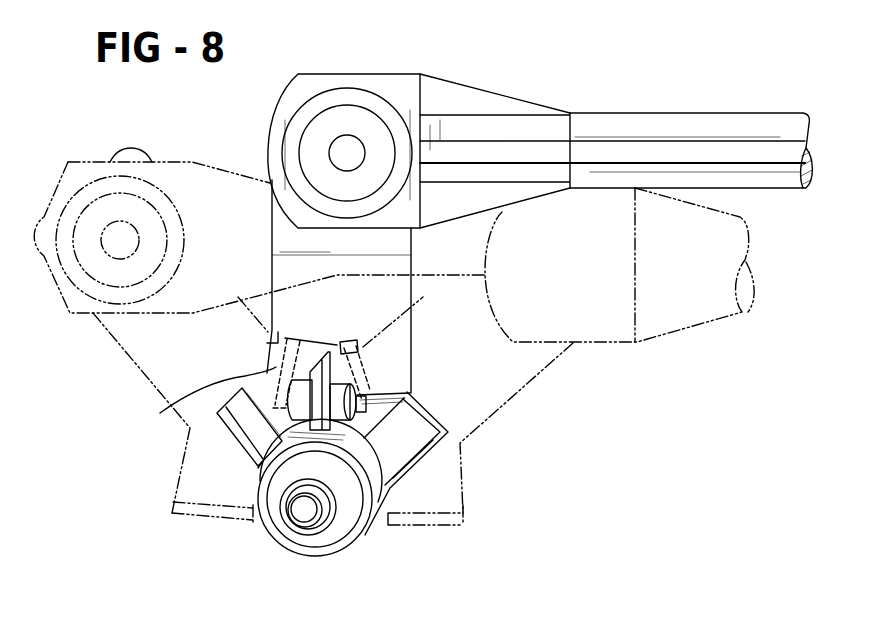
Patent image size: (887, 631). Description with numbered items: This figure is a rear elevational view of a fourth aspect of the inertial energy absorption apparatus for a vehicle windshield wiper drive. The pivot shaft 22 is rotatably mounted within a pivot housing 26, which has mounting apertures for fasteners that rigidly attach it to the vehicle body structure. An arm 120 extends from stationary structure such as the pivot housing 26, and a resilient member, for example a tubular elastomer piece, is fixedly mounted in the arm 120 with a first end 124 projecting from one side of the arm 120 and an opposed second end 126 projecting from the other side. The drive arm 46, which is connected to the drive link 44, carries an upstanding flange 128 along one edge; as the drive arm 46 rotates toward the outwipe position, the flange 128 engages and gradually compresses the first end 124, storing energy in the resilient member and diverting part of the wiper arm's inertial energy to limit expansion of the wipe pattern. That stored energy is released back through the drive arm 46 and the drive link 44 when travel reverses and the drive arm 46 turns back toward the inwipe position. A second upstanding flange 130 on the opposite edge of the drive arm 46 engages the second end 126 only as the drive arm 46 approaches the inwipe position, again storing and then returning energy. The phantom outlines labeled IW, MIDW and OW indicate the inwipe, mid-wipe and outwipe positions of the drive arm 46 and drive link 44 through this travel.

The mid wheel MIDW is at (338, 73).
The inner wheel IW is at (113, 336).
The outer wheel OW is at (570, 352).
The drive link 44 is at (625, 133).
The drive arm 46 is at (402, 263).
The first end 124 is at (162, 412).
The upstanding flange 128 is at (238, 428).
The arm 120 is at (258, 468).
The second end 126 is at (420, 397).
The second upstanding flange 130 is at (437, 500).
The pivot housing 26 is at (362, 538).
The pivot shaft 22 is at (315, 517).